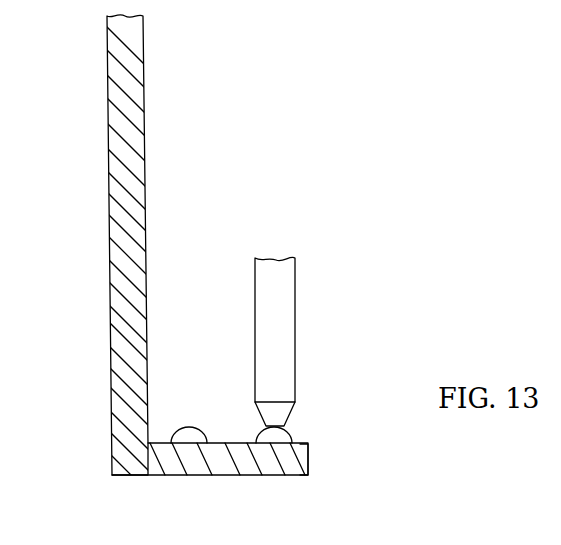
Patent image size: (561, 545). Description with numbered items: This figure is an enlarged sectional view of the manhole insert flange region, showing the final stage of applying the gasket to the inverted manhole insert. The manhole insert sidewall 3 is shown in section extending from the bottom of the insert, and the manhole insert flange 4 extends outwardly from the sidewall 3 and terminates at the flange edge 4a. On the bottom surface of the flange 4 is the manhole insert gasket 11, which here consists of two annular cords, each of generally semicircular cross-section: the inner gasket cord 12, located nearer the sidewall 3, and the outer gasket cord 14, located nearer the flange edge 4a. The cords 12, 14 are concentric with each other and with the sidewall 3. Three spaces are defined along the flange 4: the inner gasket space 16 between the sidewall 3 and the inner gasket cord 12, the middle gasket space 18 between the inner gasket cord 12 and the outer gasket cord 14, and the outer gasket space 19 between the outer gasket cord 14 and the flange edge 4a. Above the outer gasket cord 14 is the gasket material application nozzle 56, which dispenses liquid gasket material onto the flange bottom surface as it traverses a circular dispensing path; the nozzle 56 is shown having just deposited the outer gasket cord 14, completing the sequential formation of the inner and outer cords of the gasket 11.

The manhole insert sidewall 3 is at (109, 202).
The manhole insert flange 4 is at (241, 467).
The flange edge 4a is at (310, 465).
The manhole insert gasket 11 is at (289, 433).
The inner gasket cord 12 is at (193, 433).
The outer gasket cord 14 is at (257, 440).
The inner gasket space 16 is at (166, 432).
The middle gasket space 18 is at (218, 433).
The outer gasket space 19 is at (301, 436).
The gasket material application nozzle 56 is at (270, 302).